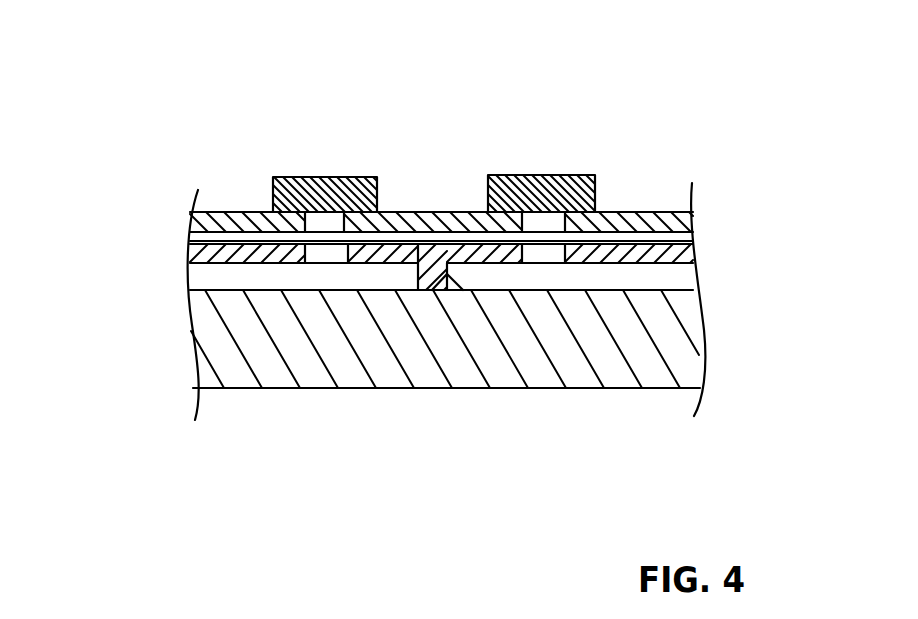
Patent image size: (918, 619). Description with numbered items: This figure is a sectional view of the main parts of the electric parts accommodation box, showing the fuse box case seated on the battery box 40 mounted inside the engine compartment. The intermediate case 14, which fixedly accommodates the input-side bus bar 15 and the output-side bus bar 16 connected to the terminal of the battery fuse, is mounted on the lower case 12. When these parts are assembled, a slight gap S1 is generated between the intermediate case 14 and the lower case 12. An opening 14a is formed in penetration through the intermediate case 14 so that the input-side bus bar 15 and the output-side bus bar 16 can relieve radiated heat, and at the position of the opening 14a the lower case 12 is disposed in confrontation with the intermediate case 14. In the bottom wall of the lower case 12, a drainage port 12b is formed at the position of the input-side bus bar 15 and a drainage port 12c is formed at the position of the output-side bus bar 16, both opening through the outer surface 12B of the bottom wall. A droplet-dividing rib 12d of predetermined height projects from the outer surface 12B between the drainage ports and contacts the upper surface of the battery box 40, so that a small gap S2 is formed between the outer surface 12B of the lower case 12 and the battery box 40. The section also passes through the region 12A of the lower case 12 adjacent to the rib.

The lower case 12 is at (683, 247).
The via plug portion 12A is at (447, 248).
The outer surface of bottom wall 12B is at (388, 260).
The drainage port 12b is at (542, 252).
The drainage port 12c is at (333, 253).
The droplet-dividing rib 12d is at (463, 290).
The intermediate case 14 is at (675, 227).
The opening 14a is at (285, 210).
The input-side bus bar 15 is at (333, 195).
The output-side bus bar 16 is at (541, 192).
The battery box 40 is at (663, 333).
The gap S1 is at (188, 242).
The gap S2 is at (378, 275).